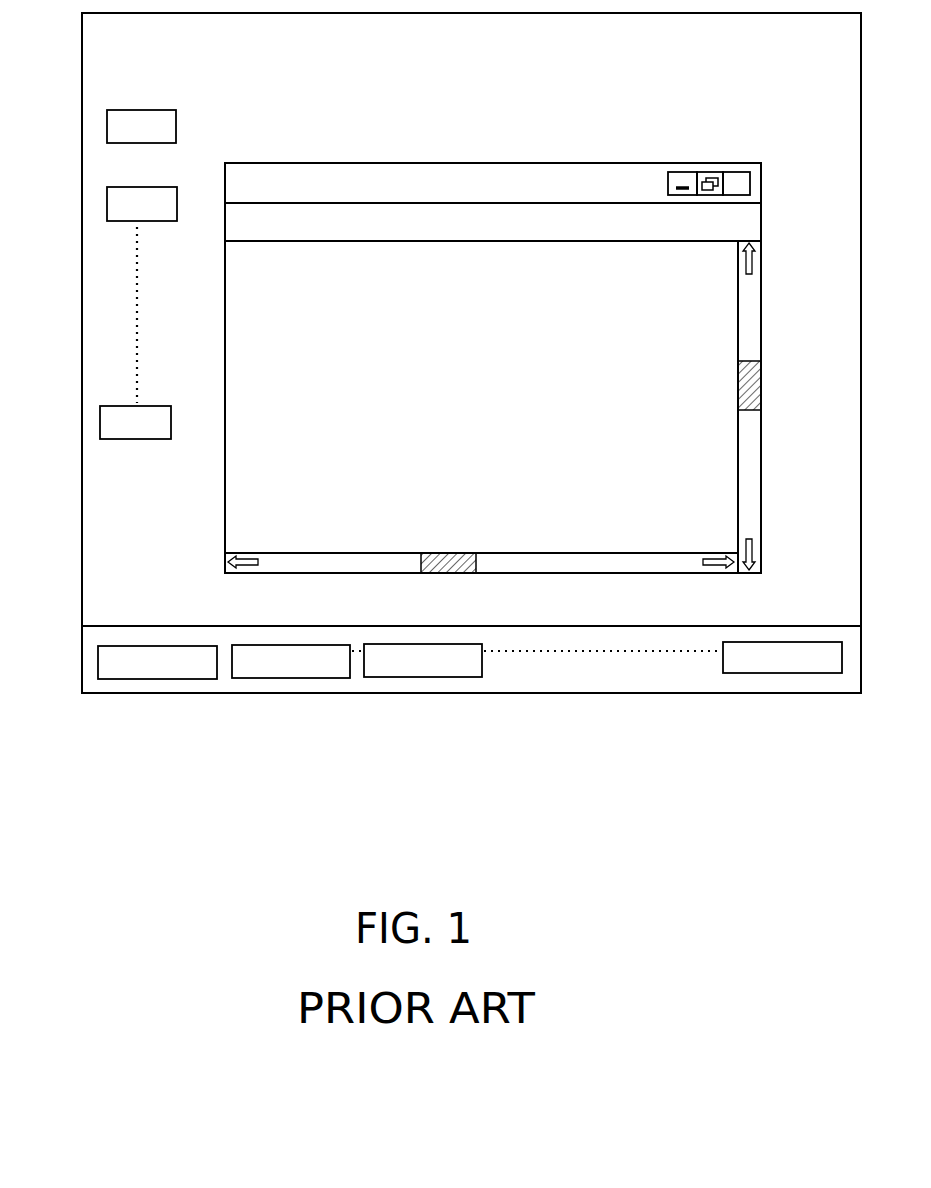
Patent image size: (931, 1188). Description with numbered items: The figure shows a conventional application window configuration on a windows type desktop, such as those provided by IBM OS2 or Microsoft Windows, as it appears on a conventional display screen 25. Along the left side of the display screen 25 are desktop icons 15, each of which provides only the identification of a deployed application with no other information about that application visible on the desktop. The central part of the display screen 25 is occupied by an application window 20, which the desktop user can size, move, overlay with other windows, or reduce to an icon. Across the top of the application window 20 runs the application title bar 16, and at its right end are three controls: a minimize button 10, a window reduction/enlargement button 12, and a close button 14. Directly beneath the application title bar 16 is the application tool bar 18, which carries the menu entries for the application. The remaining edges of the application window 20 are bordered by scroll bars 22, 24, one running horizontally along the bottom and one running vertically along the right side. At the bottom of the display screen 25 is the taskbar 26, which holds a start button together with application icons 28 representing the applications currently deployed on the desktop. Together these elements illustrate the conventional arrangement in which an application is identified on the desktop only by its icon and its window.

The minimize button 10 is at (682, 174).
The window reduction/enlargement button 12 is at (711, 172).
The close button 14 is at (740, 172).
The desktop icons 15 is at (107, 128).
The application title bar 16 is at (225, 176).
The application tool bar 18 is at (225, 227).
The application window 20 is at (225, 327).
The scroll bar 22 is at (277, 552).
The scroll bar 24 is at (748, 460).
The display screen 25 is at (82, 610).
The taskbar 26 is at (195, 686).
The application icons 28 is at (445, 678).